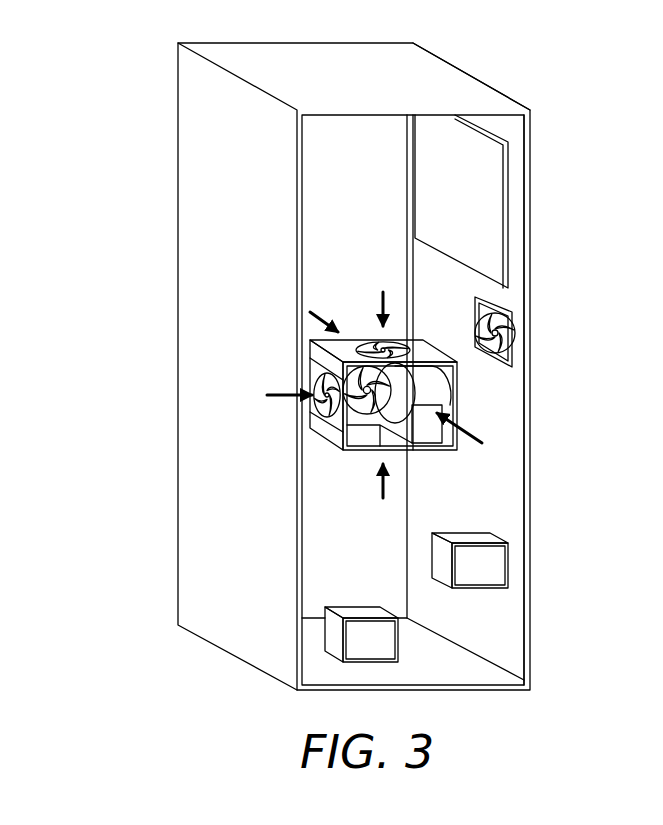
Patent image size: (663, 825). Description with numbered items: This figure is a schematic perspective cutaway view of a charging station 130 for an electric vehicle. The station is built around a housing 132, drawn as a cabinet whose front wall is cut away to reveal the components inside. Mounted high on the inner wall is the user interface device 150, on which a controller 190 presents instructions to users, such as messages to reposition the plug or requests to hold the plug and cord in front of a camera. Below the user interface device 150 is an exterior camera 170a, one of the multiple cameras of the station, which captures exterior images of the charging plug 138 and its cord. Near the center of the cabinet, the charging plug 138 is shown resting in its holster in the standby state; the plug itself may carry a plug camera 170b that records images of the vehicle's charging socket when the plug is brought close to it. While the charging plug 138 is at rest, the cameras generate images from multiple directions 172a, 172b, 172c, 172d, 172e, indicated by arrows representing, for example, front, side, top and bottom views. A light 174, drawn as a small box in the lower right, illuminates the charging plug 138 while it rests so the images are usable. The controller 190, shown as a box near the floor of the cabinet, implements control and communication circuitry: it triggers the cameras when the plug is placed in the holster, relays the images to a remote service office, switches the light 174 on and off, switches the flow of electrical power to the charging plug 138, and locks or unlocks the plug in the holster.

The charging station 130 is at (150, 87).
The housing 132 is at (532, 500).
The charging plug 138 is at (442, 393).
The user interface device 150 is at (503, 210).
The exterior camera 170a is at (510, 333).
The plug camera 170b is at (318, 402).
The direction 172a is at (285, 390).
The direction 172b is at (337, 317).
The direction 172c is at (380, 315).
The direction 172d is at (472, 447).
The direction 172e is at (380, 480).
The light 174 is at (498, 572).
The controller 190 is at (390, 640).